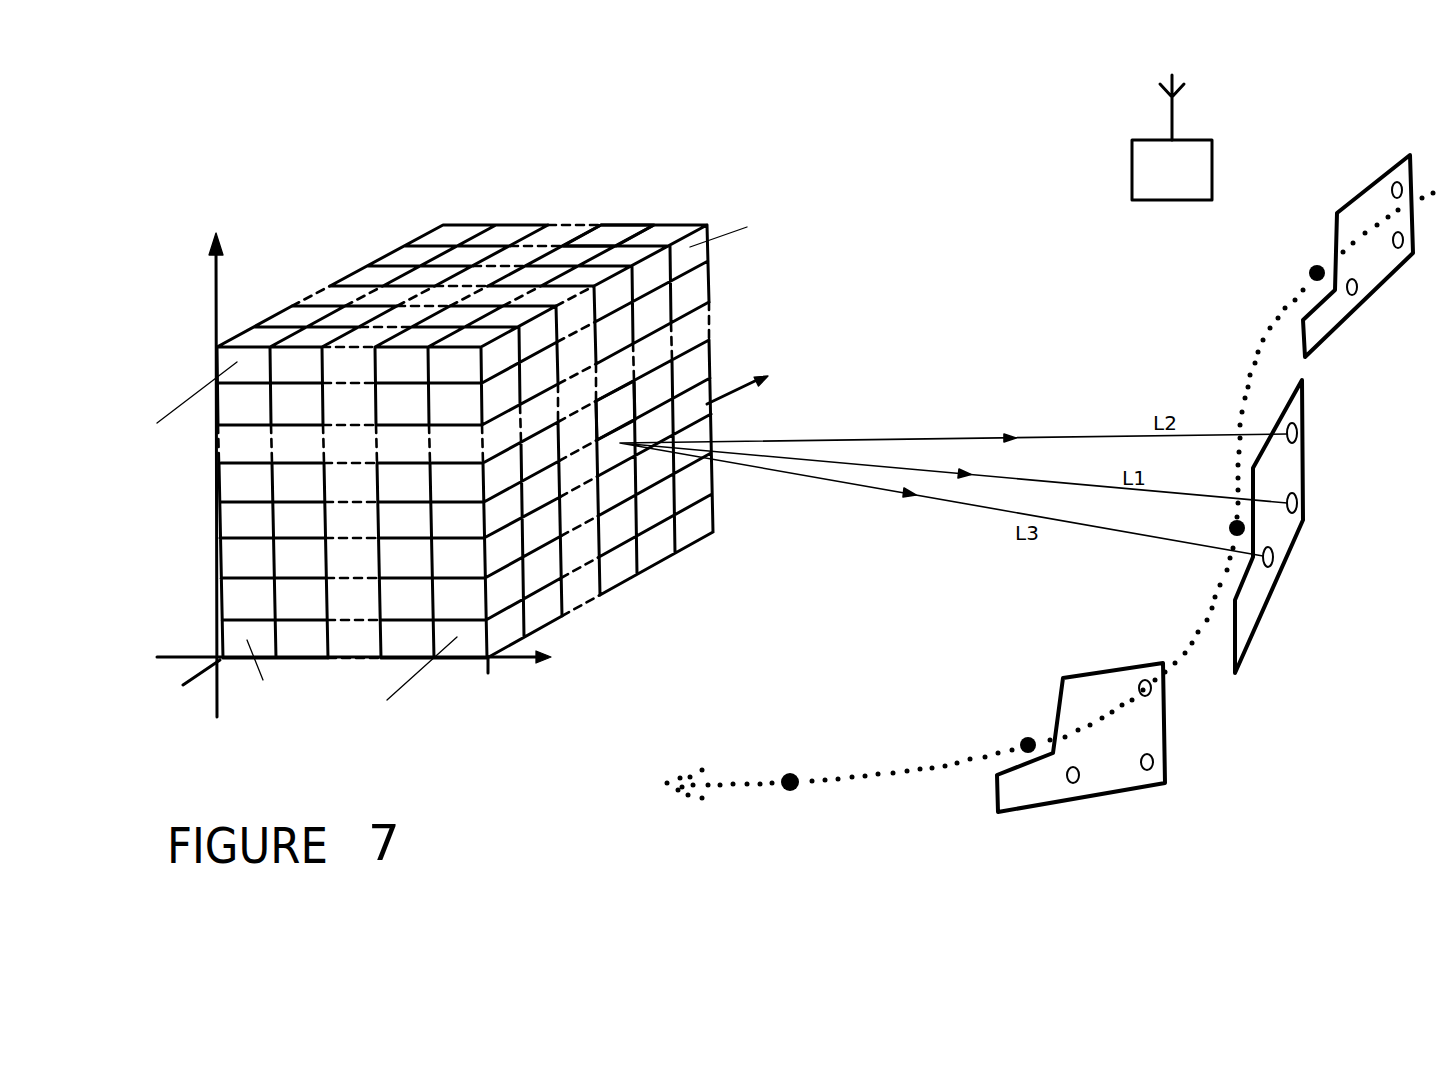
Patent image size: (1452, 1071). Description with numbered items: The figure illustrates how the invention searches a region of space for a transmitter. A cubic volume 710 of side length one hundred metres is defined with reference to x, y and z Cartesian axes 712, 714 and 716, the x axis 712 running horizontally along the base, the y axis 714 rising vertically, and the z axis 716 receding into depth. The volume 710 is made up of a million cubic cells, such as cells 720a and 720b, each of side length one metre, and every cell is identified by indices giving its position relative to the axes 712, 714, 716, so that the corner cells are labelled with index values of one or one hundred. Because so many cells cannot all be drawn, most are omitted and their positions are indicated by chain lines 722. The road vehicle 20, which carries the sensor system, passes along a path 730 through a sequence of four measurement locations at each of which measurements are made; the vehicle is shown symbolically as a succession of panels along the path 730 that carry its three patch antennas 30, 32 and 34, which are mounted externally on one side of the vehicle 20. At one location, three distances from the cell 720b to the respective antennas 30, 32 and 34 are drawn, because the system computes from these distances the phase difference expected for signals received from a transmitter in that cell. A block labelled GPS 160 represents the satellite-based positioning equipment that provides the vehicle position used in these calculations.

The cubic volume 710 is at (498, 440).
The x Cartesian axis 712 is at (515, 657).
The y Cartesian axis 714 is at (218, 293).
The z Cartesian axis 716 is at (723, 397).
The cubic cell 720a is at (603, 223).
The cubic cell 720b is at (613, 457).
The chain lines 722 is at (590, 603).
The path 730 is at (870, 775).
The GPS receiver 160 is at (1140, 155).
The road vehicle 20 is at (1362, 192).
The patch antenna 30 is at (1135, 763).
The patch antenna 32 is at (1150, 688).
The patch antenna 34 is at (1077, 777).